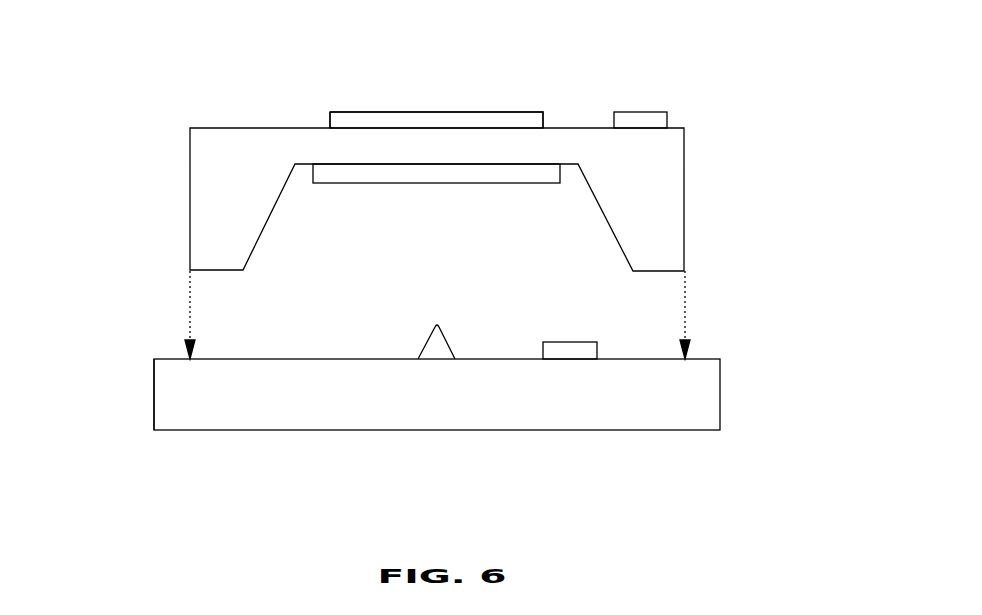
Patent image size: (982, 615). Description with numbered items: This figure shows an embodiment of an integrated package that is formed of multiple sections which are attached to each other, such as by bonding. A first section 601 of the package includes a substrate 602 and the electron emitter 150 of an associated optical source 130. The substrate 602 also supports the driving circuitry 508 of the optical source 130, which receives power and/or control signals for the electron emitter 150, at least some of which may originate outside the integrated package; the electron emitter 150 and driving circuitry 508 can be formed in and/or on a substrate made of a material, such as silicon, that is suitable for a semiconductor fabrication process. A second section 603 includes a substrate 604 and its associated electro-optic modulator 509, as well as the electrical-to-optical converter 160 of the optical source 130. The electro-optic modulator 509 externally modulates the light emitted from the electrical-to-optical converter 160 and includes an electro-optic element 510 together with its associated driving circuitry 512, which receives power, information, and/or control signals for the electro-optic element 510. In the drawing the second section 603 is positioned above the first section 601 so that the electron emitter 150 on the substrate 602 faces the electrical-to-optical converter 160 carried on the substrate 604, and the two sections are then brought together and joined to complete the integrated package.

The substrate 604 is at (296, 128).
The second section 603 is at (432, 86).
The electro-optic element 510 is at (513, 112).
The driving circuitry 512 is at (648, 112).
The electro-optic modulator 509 is at (656, 52).
The electrical-to-optical converter 160 is at (453, 183).
The optical source 130 is at (516, 412).
The substrate 602 is at (153, 393).
The electron emitter 150 is at (425, 344).
The driving circuitry 508 is at (560, 342).
The first section 601 is at (773, 451).